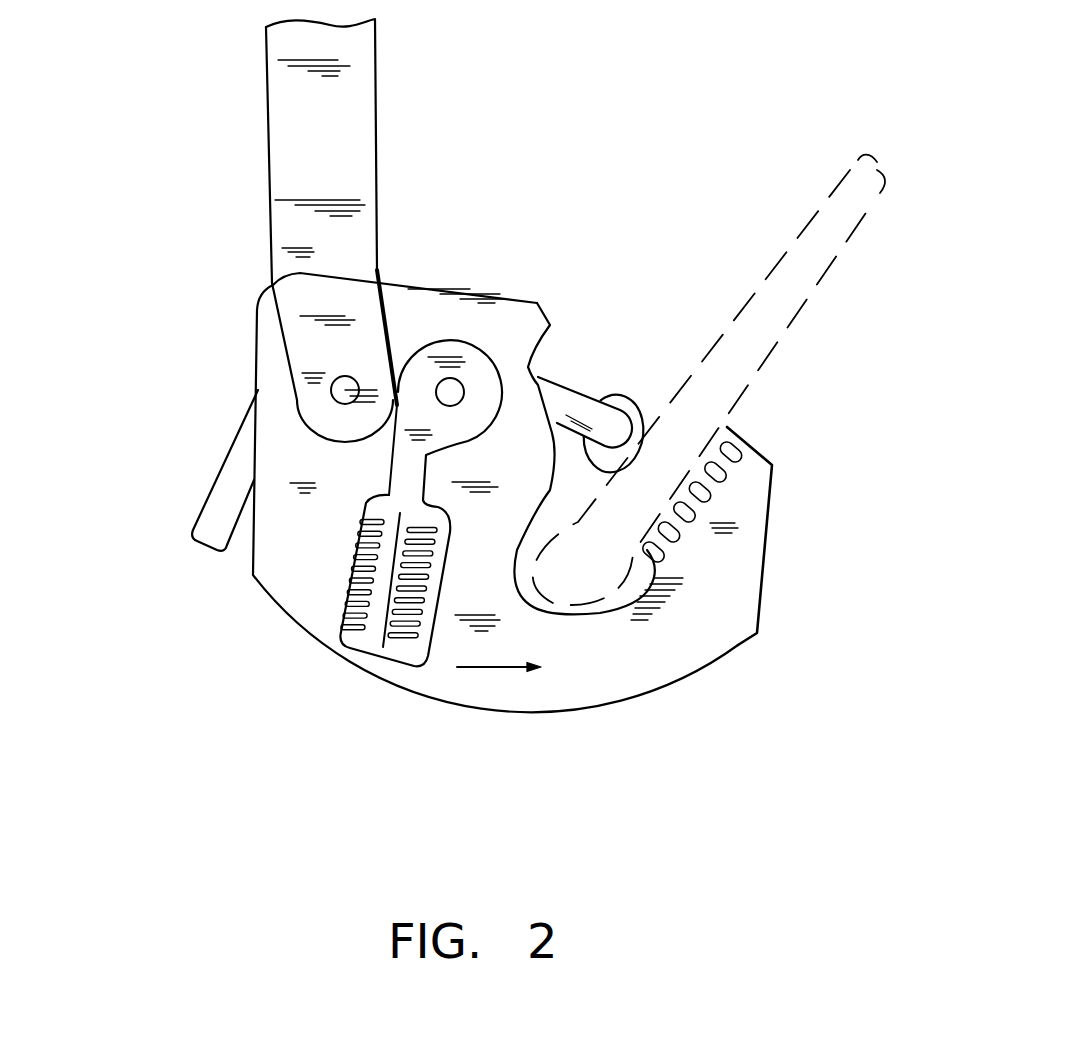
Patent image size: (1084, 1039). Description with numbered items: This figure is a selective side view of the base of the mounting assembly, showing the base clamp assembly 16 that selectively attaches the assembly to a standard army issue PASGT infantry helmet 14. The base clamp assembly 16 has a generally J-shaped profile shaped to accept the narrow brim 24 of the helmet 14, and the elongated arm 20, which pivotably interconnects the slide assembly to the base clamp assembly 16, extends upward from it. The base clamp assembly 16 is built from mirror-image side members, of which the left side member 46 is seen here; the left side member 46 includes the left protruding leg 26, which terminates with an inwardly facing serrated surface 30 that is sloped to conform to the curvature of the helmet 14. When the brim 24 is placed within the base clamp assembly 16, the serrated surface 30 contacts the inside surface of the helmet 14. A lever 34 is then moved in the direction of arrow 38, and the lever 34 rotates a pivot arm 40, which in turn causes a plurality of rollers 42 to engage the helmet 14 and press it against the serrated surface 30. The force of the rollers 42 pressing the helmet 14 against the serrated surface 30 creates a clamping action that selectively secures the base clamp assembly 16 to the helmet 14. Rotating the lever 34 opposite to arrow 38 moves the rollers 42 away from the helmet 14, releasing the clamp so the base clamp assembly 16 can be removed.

The helmet 14 is at (808, 268).
The base clamp assembly 16 is at (185, 582).
The elongated arm 20 is at (363, 118).
The brim 24 is at (585, 588).
The protruding leg 26 is at (713, 637).
The serrated surface 30 is at (736, 430).
The lever 34 is at (380, 627).
The arrow 38 is at (487, 667).
The pivot arm 40 is at (563, 397).
The rollers 42 is at (635, 400).
The left side member 46 is at (285, 515).